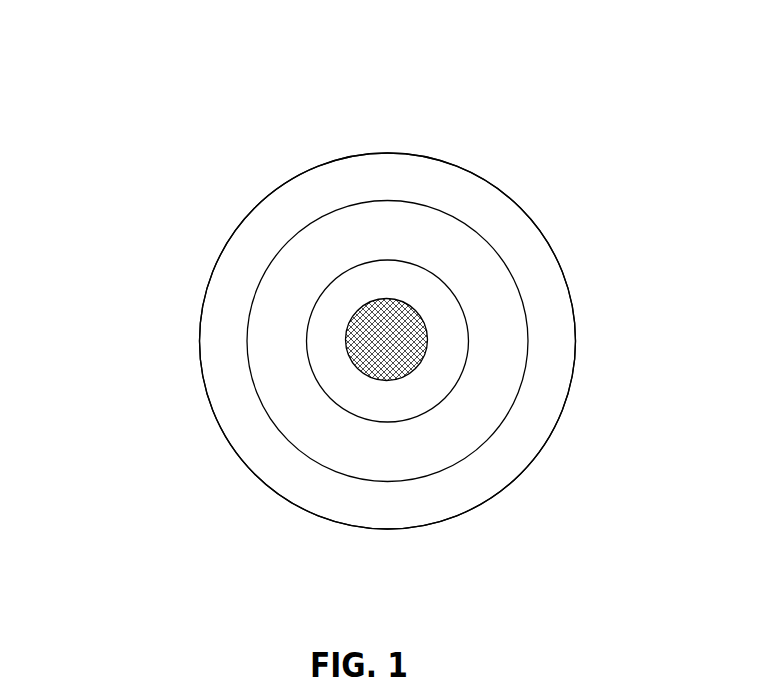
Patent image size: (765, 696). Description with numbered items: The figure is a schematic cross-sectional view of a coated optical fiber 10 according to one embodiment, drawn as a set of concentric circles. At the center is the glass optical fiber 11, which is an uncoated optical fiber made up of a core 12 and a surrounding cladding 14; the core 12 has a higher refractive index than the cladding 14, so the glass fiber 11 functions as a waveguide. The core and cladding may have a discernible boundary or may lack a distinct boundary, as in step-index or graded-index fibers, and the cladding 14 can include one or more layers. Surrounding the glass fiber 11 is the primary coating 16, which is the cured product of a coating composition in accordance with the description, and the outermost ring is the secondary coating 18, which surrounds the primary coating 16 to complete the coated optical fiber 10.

The coated optical fiber 10 is at (150, 132).
The glass optical fiber 11 is at (455, 286).
The core 12 is at (412, 325).
The cladding 14 is at (447, 355).
The primary coating 16 is at (297, 403).
The secondary coating 18 is at (268, 458).